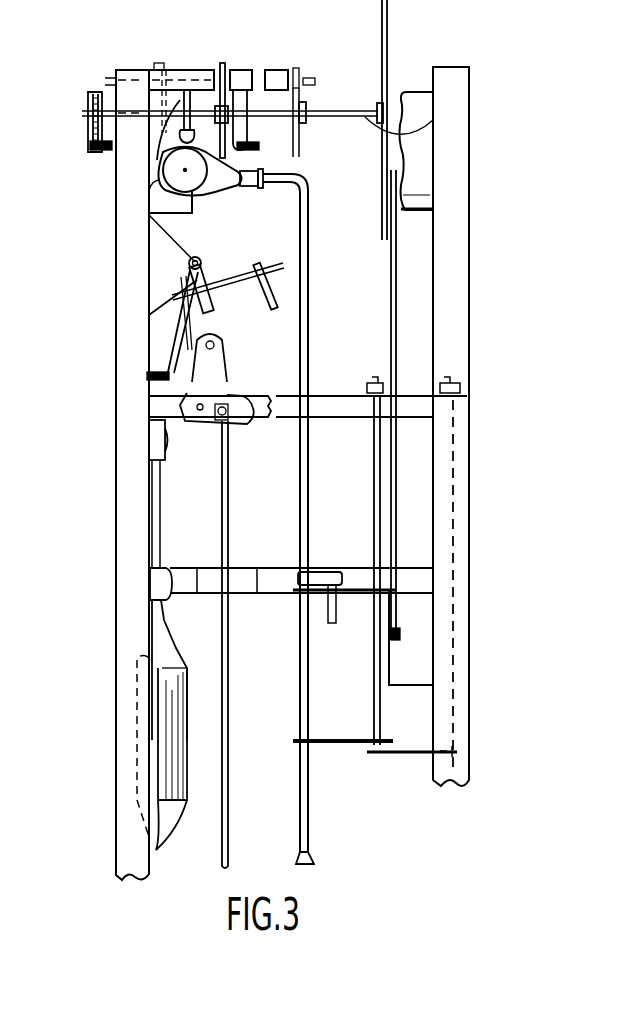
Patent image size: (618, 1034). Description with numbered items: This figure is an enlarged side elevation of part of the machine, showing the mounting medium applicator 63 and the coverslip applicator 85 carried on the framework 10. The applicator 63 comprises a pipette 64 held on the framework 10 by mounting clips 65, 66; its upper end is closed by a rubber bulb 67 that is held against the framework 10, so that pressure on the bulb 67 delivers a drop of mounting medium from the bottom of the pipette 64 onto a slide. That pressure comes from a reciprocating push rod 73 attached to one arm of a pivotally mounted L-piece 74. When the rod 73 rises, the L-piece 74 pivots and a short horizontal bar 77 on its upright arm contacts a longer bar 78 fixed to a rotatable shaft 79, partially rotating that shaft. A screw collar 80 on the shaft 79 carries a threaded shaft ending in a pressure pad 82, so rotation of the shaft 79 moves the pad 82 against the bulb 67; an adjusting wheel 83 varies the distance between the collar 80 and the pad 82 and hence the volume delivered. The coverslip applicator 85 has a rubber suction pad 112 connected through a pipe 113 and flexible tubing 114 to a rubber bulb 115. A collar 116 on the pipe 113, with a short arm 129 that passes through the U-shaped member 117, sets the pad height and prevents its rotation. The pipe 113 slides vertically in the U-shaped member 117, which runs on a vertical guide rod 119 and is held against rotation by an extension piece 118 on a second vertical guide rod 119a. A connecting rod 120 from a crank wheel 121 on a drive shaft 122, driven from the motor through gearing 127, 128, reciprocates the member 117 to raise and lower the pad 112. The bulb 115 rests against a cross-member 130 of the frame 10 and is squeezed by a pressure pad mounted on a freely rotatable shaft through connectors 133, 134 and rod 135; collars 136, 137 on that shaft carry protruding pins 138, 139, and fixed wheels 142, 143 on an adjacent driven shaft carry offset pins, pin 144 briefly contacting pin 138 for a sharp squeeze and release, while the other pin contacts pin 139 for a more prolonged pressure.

The framework 10 is at (482, 426).
The mounting medium applicator 63 is at (160, 653).
The pipette 64 is at (158, 721).
The mounting clip 65 is at (150, 580).
The mounting clip 66 is at (148, 443).
The rubber bulb 67 is at (150, 327).
The push rod 73 is at (222, 503).
The L-piece 74 is at (218, 380).
The short horizontal bar 77 is at (216, 345).
The longer bar 78 is at (178, 278).
The rotatable shaft 79 is at (197, 257).
The screw collar 80 is at (216, 312).
The pressure pad 82 is at (172, 333).
The adjusting wheel 83 is at (262, 262).
The coverslip applicator 85 is at (313, 672).
The rubber suction pad 112 is at (320, 864).
The pipe 113 is at (311, 770).
The flexible tubing 114 is at (310, 268).
The rubber bulb 115 is at (155, 194).
The collar 116 is at (335, 572).
The U-shaped member 117 is at (388, 718).
The extension piece 118 is at (412, 687).
The vertical guide rod 119 is at (374, 480).
The second vertical guide rod 119a is at (470, 604).
The connecting rod 120 is at (474, 246).
The crank wheel 121 is at (388, 40).
The drive shaft 122 is at (414, 151).
The gearing 127 is at (88, 98).
The gearing 128 is at (92, 146).
The short arm 129 is at (327, 597).
The cross-member 130 is at (424, 188).
The connector 133 is at (180, 171).
The connector 134 is at (160, 73).
The rod 135 is at (200, 74).
The collar 136 is at (246, 72).
The collar 137 is at (290, 70).
The protruding pin 138 is at (263, 152).
The protruding pin 139 is at (285, 136).
The fixed wheel 142 is at (222, 65).
The fixed wheel 143 is at (307, 99).
The offset pin 144 is at (241, 194).